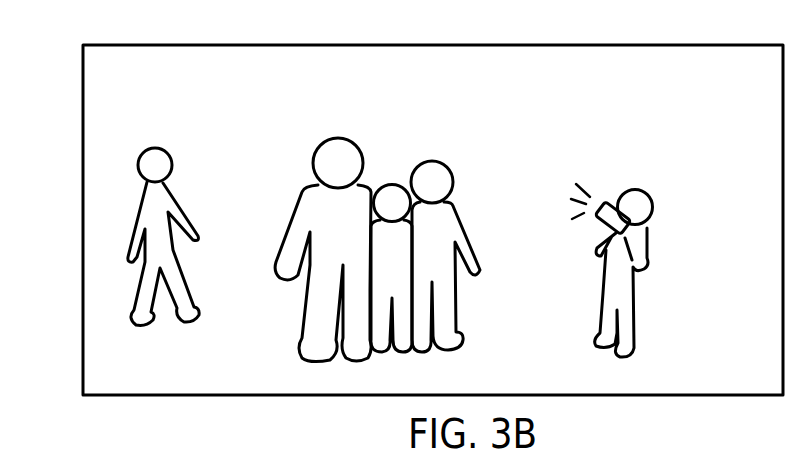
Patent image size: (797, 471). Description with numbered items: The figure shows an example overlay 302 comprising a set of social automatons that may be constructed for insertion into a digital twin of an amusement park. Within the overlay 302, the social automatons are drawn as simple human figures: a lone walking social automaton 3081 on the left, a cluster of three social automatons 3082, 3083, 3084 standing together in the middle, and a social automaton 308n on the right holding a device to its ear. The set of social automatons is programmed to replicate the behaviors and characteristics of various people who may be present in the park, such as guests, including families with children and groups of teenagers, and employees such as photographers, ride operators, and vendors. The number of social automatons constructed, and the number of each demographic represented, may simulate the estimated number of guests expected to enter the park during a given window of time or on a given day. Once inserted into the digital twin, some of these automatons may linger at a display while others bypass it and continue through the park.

The overlay 302 is at (68, 46).
The social automaton 3081 is at (158, 145).
The social automaton 3082 is at (335, 140).
The social automaton 3083 is at (388, 184).
The social automaton 3084 is at (438, 162).
The social automaton 308n is at (639, 190).